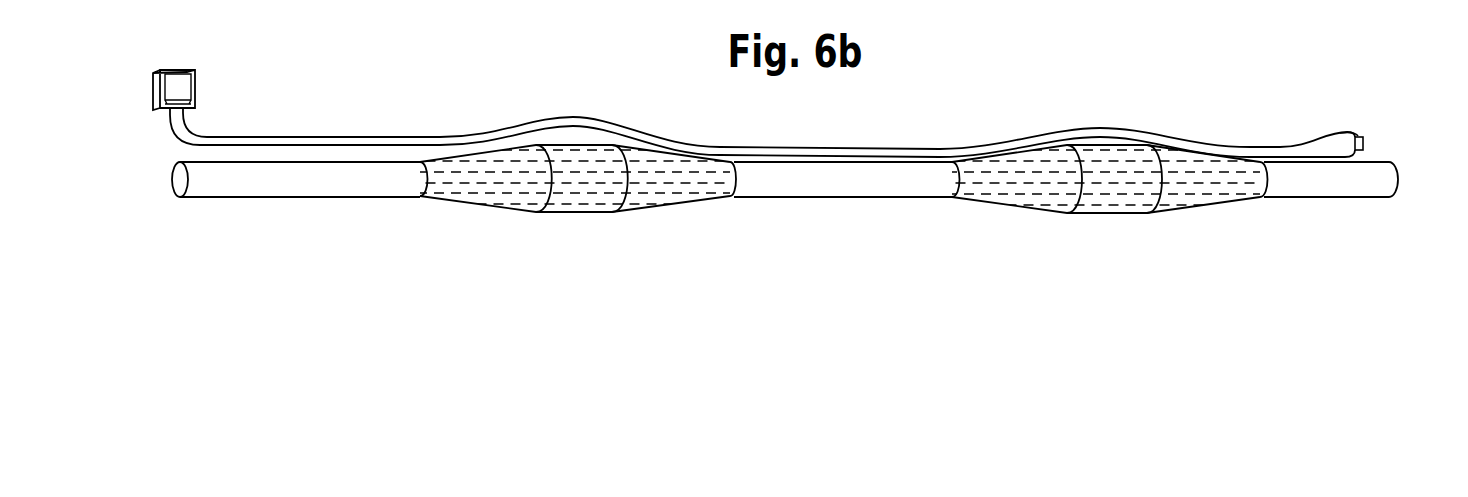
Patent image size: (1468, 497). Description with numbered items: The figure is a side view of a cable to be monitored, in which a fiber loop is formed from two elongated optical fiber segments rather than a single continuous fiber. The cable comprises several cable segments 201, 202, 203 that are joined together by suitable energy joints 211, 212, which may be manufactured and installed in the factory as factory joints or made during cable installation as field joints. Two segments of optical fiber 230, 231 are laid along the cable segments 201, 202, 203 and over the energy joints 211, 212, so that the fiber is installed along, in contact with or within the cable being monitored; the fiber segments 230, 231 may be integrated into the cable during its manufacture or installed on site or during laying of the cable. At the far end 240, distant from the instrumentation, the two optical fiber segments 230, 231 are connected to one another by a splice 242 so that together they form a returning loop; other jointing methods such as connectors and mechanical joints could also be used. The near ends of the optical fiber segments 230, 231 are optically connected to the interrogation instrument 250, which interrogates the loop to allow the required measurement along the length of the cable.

The cable segment 201 is at (322, 182).
The cable segment 202 is at (863, 178).
The cable segment 203 is at (1310, 175).
The energy joint 211 is at (578, 182).
The energy joint 212 is at (1105, 190).
The optical fiber segment 230 is at (178, 132).
The optical fiber segment 231 is at (203, 133).
The far end 240 is at (1367, 128).
The splice 242 is at (1364, 143).
The interrogation instrument 250 is at (177, 68).